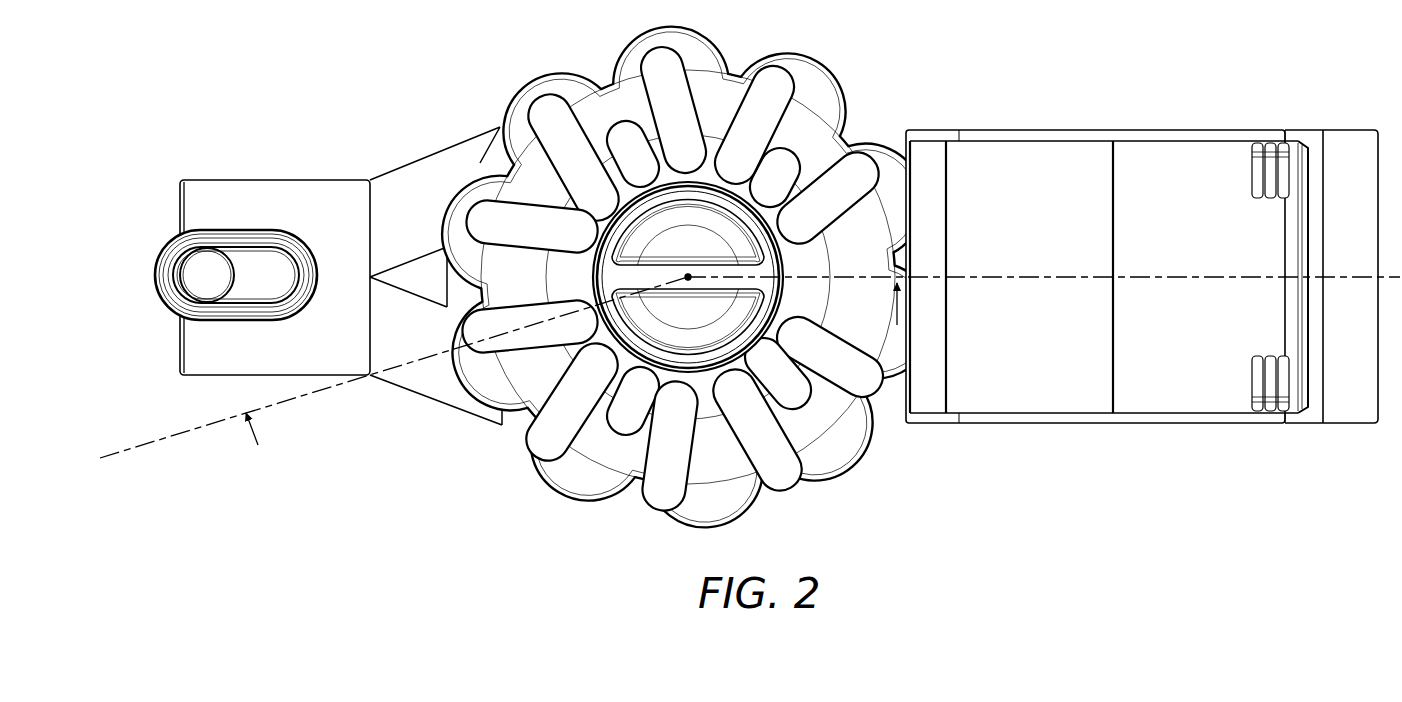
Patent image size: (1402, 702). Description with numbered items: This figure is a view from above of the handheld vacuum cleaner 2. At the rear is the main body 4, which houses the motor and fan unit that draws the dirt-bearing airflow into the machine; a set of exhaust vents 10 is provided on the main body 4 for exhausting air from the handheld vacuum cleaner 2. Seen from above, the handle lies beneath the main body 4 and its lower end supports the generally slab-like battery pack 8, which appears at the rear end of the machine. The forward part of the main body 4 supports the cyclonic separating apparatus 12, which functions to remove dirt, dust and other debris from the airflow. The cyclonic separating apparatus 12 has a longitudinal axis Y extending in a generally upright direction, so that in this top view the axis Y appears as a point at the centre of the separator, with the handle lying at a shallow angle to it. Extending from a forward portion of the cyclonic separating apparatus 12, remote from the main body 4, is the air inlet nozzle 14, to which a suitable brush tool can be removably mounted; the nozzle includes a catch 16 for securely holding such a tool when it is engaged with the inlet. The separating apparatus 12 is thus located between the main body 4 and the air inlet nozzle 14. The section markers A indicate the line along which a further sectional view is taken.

The handheld vacuum cleaner 2 is at (1160, 499).
The main body 4 is at (1161, 90).
The battery pack 8 is at (1303, 425).
The exhaust vents 10 is at (1290, 158).
The cyclonic separating apparatus 12 is at (610, 529).
The air inlet nozzle 14 is at (322, 180).
The catch 16 is at (233, 266).
The longitudinal axis Y is at (690, 279).
The section line A is at (575, 379).